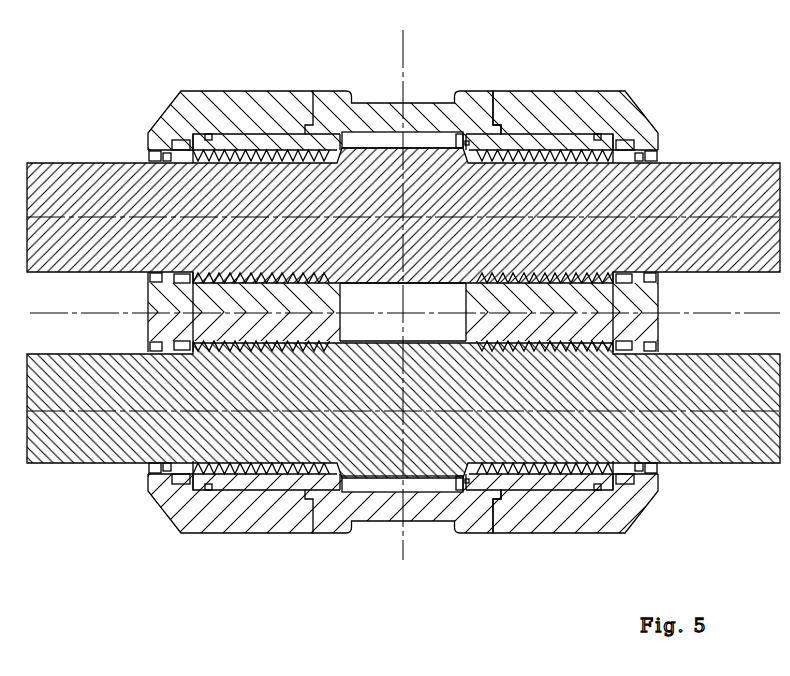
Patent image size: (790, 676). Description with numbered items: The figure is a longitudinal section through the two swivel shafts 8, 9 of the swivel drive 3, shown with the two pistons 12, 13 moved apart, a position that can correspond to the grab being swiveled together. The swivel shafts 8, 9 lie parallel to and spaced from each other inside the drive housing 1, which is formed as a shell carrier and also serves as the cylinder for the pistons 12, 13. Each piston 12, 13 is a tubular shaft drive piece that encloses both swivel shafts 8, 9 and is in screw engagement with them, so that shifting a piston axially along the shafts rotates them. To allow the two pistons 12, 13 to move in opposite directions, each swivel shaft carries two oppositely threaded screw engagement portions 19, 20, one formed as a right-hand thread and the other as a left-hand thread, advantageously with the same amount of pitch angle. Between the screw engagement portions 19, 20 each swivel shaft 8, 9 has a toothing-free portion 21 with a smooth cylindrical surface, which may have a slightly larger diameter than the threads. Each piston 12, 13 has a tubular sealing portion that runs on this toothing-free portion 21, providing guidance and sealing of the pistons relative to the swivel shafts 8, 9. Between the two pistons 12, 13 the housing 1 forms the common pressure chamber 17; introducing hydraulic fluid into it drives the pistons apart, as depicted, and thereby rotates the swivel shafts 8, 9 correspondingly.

The drive housing 1 is at (524, 102).
The swivel drive 3 is at (446, 341).
The swivel shaft 8 is at (722, 458).
The swivel shaft 9 is at (723, 173).
The piston 12 is at (553, 485).
The piston 13 is at (248, 485).
The common pressure chamber 17 is at (432, 137).
The screw engagement portion 19 is at (523, 475).
The screw engagement portion 20 is at (283, 473).
The toothing-free portion 21 is at (377, 138).